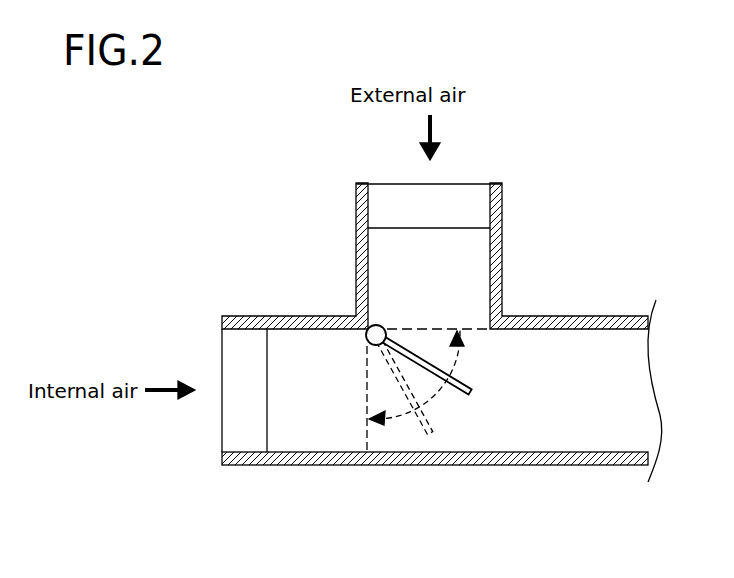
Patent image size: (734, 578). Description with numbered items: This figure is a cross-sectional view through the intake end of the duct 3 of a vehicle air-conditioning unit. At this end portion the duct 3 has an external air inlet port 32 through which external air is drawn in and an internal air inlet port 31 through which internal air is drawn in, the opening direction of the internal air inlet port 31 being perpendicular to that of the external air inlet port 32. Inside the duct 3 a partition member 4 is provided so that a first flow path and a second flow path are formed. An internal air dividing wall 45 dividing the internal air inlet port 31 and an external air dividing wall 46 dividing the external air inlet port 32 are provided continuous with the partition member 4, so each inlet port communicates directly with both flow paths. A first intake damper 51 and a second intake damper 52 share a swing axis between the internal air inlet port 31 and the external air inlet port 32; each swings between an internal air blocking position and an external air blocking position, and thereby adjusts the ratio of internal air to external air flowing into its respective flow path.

The duct 3 is at (572, 316).
The partition member 4 is at (577, 405).
The internal air inlet port 31 is at (208, 357).
The external air inlet port 32 is at (468, 181).
The internal air dividing wall 45 is at (317, 410).
The external air dividing wall 46 is at (427, 281).
The first intake damper 51 is at (413, 410).
The second intake damper 52 is at (455, 397).